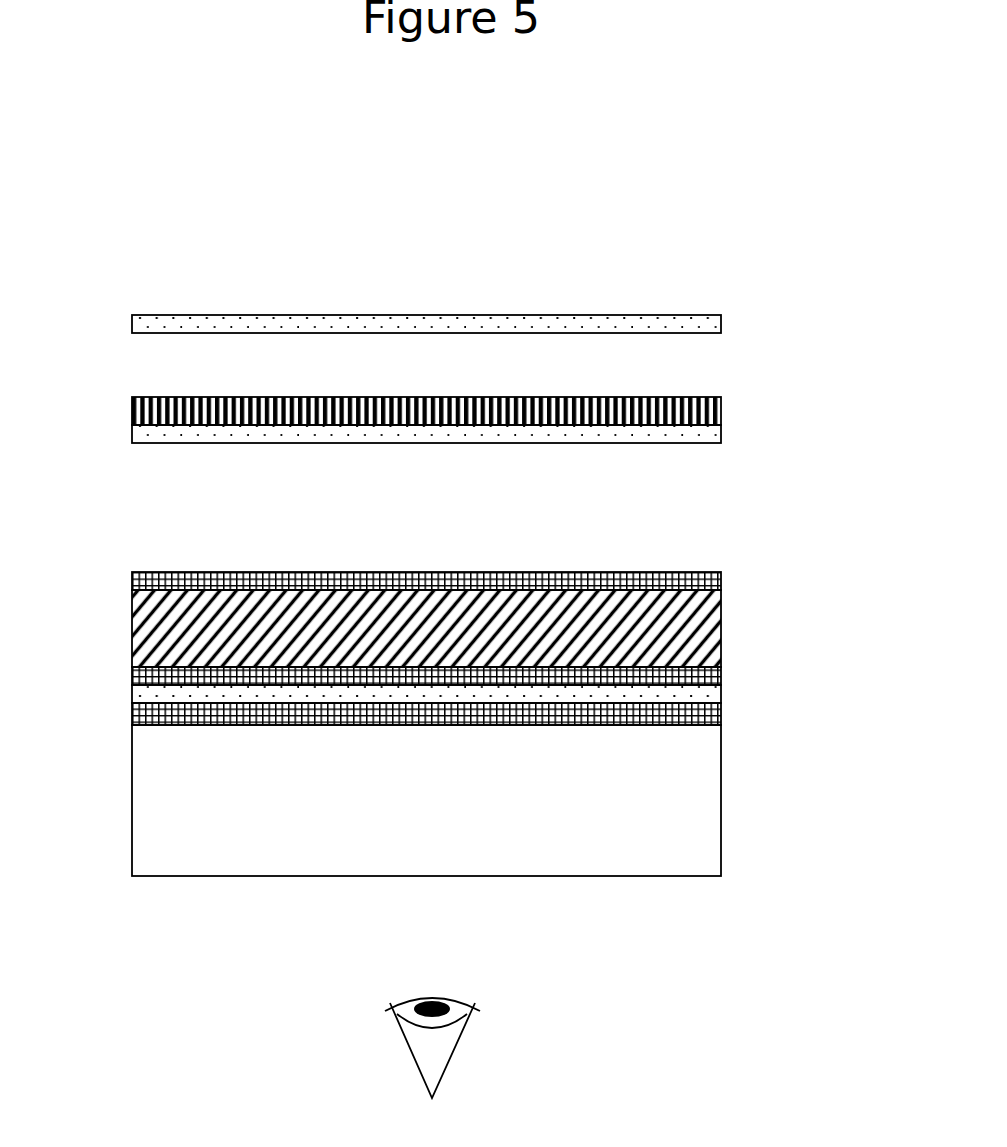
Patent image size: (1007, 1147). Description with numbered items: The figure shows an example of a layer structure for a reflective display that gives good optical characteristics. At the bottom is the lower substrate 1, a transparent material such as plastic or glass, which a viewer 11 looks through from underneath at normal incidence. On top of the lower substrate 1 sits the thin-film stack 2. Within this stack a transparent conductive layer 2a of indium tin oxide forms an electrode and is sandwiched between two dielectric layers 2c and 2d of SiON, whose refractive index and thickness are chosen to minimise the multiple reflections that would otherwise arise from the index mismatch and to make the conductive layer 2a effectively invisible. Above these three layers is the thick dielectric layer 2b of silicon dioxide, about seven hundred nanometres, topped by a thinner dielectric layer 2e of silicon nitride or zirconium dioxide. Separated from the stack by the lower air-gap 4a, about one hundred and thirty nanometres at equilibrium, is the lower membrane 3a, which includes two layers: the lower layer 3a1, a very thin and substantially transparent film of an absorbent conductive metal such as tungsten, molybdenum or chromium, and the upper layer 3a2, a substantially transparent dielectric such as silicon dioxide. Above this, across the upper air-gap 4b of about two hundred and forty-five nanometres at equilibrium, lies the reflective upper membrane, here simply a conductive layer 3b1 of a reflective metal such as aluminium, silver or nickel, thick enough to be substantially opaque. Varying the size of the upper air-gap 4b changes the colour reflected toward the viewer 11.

The lower substrate 1 is at (180, 807).
The thin-film stack 2 is at (452, 647).
The transparent conductive layer 2a is at (688, 698).
The dielectric layer 2b is at (688, 627).
The dielectric layer 2c is at (688, 718).
The dielectric layer 2d is at (688, 677).
The dielectric layer 2e is at (700, 572).
The lower membrane 3a is at (453, 408).
The lower layer of lower membrane 3a1 is at (688, 433).
The upper layer of lower membrane 3a2 is at (688, 413).
The conductive layer 3b1 is at (688, 323).
The lower air-gap 4a is at (686, 488).
The upper air-gap 4b is at (685, 353).
The viewer 11 is at (407, 1049).